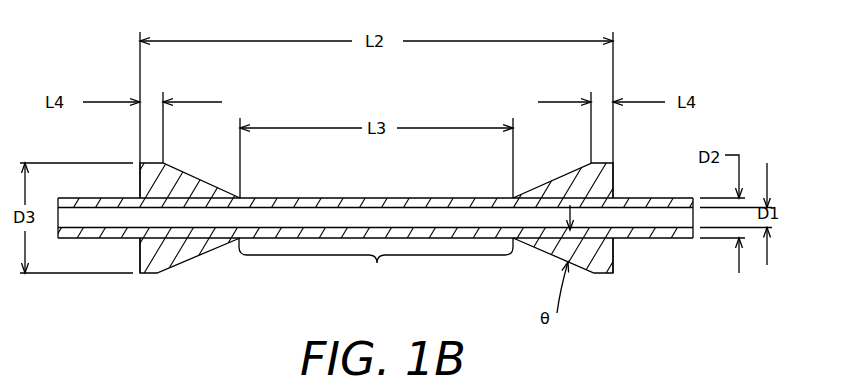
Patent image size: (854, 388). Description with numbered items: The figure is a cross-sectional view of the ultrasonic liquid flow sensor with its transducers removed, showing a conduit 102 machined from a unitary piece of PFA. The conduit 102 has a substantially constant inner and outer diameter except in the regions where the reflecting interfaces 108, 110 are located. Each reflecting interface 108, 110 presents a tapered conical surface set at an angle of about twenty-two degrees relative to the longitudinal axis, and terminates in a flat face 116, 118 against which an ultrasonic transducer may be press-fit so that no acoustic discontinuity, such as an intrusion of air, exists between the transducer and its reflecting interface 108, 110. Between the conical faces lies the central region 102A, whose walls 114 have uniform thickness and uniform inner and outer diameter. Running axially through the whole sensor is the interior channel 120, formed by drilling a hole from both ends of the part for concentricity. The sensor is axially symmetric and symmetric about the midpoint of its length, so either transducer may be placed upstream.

The conduit 102 is at (108, 198).
The central region 102A is at (376, 265).
The reflecting interface 108 is at (555, 253).
The reflecting interface 110 is at (173, 267).
The walls 114 is at (358, 198).
The flat face 116 is at (615, 263).
The flat face 118 is at (138, 252).
The interior channel 120 is at (490, 218).